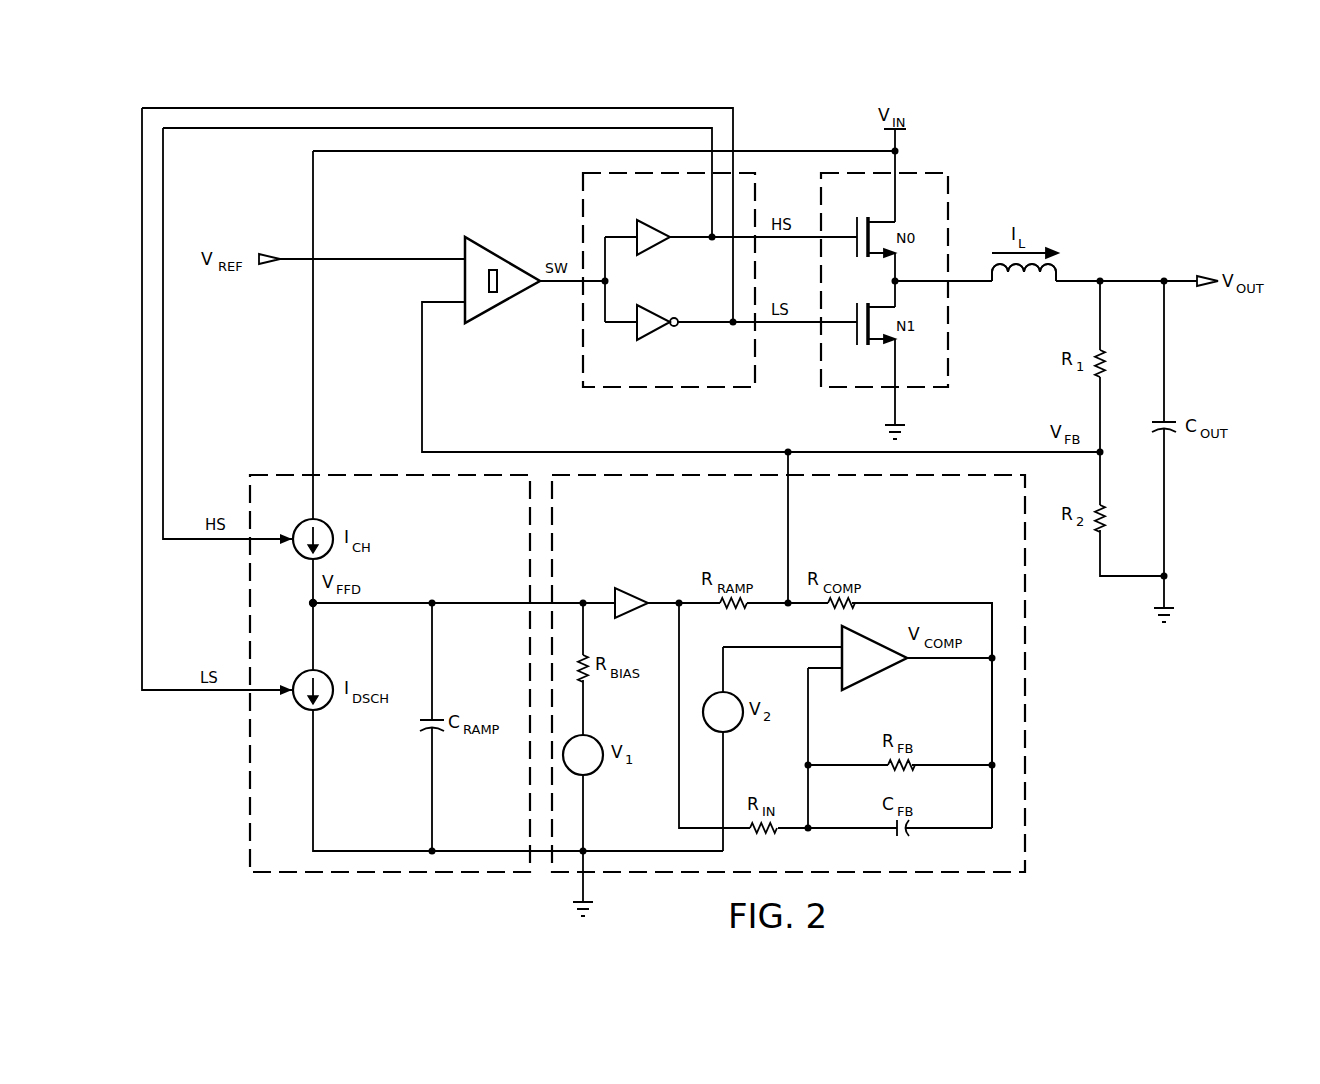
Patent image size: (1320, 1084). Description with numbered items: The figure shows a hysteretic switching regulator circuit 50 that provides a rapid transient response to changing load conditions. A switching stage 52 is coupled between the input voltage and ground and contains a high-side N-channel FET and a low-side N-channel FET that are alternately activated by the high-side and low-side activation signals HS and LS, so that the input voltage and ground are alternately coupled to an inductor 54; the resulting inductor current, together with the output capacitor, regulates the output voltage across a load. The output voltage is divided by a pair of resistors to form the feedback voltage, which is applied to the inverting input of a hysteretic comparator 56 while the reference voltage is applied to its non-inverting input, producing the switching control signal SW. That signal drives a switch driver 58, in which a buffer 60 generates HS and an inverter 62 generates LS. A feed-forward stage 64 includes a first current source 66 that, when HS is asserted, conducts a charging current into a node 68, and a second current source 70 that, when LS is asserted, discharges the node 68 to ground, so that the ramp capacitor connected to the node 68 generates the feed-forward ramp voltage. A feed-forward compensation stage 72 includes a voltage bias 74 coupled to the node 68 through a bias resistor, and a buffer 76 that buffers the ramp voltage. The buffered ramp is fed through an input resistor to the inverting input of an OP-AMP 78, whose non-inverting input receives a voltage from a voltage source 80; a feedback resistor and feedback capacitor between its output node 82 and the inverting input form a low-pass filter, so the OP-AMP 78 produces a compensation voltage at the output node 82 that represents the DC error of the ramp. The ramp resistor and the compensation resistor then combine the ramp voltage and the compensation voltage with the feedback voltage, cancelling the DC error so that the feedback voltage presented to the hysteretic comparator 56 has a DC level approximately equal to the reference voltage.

The hysteretic switching regulator circuit 50 is at (1088, 142).
The switching stage 52 is at (961, 200).
The inductor 54 is at (1056, 264).
The hysteretic comparator 56 is at (503, 260).
The switch driver 58 is at (573, 198).
The buffer 60 is at (657, 226).
The inverter 62 is at (659, 332).
The feed-forward stage 64 is at (236, 743).
The first current source 66 is at (330, 522).
The node 68 is at (310, 605).
The second current source 70 is at (323, 710).
The feed-forward compensation stage 72 is at (1036, 741).
The voltage bias 74 is at (591, 773).
The buffer 76 is at (635, 591).
The OP-AMP 78 is at (875, 672).
The voltage source 80 is at (733, 730).
The output node 82 is at (992, 586).